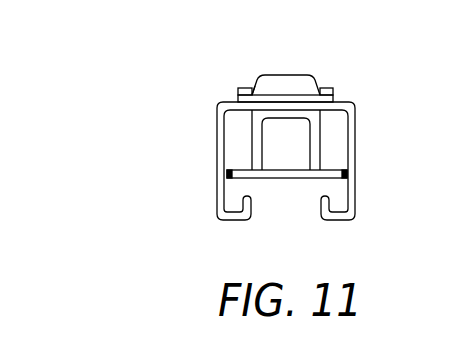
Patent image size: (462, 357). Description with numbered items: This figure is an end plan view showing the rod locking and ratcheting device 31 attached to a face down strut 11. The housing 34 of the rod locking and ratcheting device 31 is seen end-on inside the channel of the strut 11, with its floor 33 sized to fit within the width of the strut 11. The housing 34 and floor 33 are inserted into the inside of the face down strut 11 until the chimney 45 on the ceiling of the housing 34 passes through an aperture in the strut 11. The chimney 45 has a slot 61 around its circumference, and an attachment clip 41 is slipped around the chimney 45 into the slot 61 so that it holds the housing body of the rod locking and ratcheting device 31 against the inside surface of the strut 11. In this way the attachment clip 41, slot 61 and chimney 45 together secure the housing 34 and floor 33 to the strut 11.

The face down strut 11 is at (356, 162).
The rod locking and ratcheting device 31 is at (320, 143).
The floor 33 is at (259, 178).
The housing 34 is at (254, 147).
The attachment clip 41 is at (334, 89).
The chimney 45 is at (287, 76).
The slot 61 is at (257, 93).